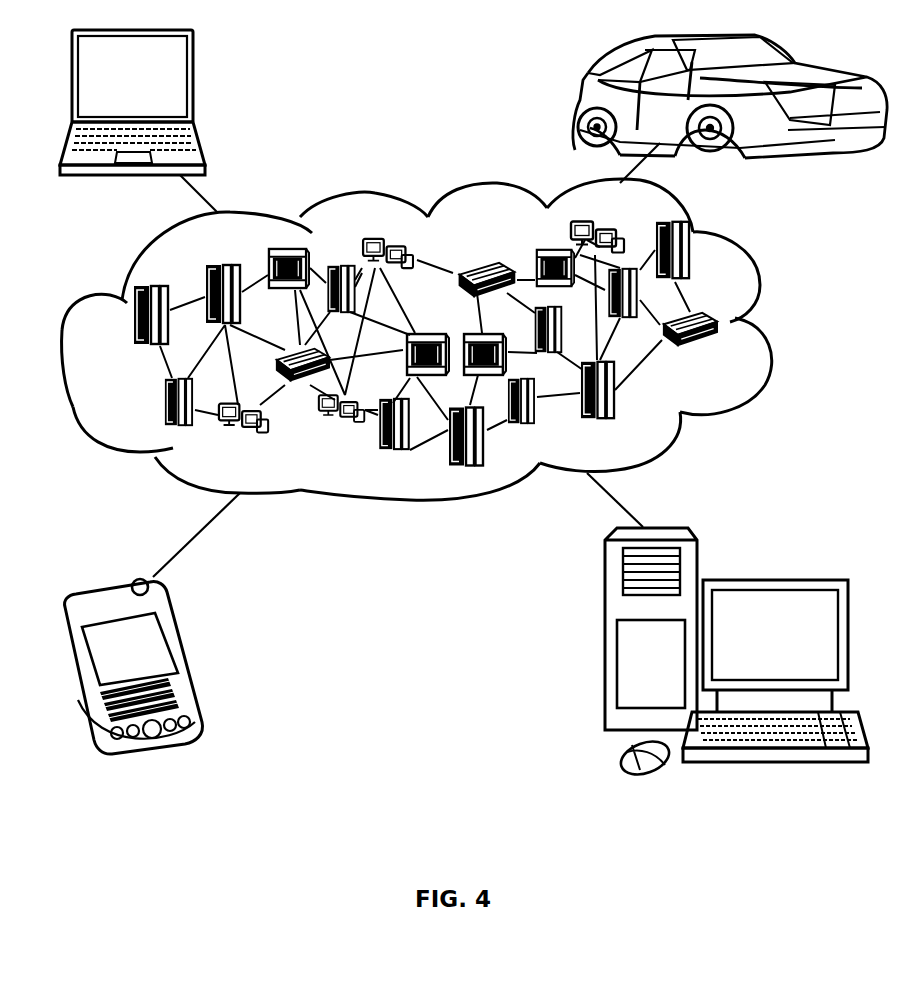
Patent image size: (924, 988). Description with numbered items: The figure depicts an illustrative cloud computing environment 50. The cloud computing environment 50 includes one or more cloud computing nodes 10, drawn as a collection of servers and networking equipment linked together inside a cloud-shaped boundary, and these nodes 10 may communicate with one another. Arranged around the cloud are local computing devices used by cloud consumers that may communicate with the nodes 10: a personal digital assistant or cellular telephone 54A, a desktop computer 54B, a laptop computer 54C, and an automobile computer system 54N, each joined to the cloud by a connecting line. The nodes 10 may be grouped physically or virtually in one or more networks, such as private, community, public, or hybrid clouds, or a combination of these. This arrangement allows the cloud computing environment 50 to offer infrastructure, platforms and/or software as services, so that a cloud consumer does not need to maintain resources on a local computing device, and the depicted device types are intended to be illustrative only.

The cloud computing environment 50 is at (773, 323).
The cloud computing nodes 10 is at (720, 352).
The personal digital assistant or cellular telephone 54A is at (187, 657).
The desktop computer 54B is at (772, 580).
The laptop computer 54C is at (193, 84).
The automobile computer system 54N is at (582, 98).